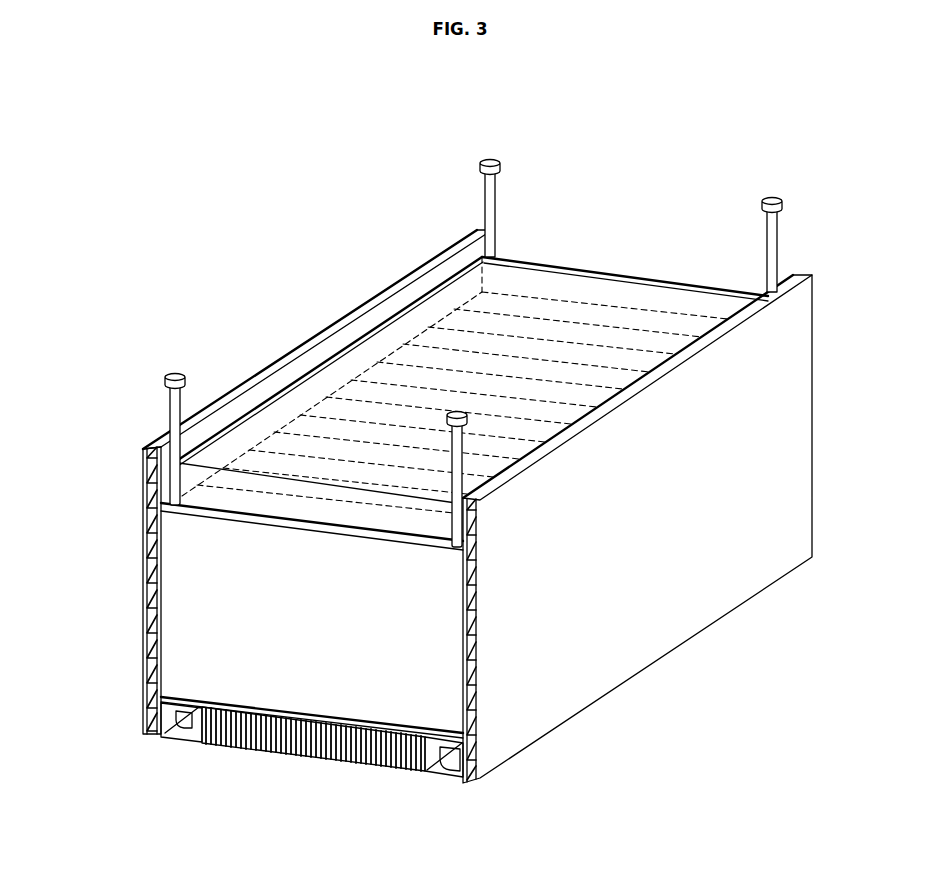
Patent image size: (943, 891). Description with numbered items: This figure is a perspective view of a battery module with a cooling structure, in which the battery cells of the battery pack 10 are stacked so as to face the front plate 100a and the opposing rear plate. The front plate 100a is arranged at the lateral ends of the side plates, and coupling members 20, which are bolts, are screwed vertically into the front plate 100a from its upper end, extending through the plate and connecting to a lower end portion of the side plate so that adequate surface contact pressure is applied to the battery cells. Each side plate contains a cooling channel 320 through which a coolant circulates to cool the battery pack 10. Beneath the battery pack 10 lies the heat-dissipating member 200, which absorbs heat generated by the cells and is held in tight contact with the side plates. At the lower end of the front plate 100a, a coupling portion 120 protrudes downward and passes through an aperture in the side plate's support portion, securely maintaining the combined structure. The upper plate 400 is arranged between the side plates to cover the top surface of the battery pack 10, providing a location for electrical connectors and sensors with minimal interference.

The battery pack 10 is at (370, 385).
The coupling member 20 is at (775, 198).
The front plate 100a is at (204, 603).
The coupling portion 120 is at (176, 723).
The heat-dissipating member 200 is at (293, 744).
The cooling channel 320 is at (470, 665).
The upper plate 400 is at (546, 264).